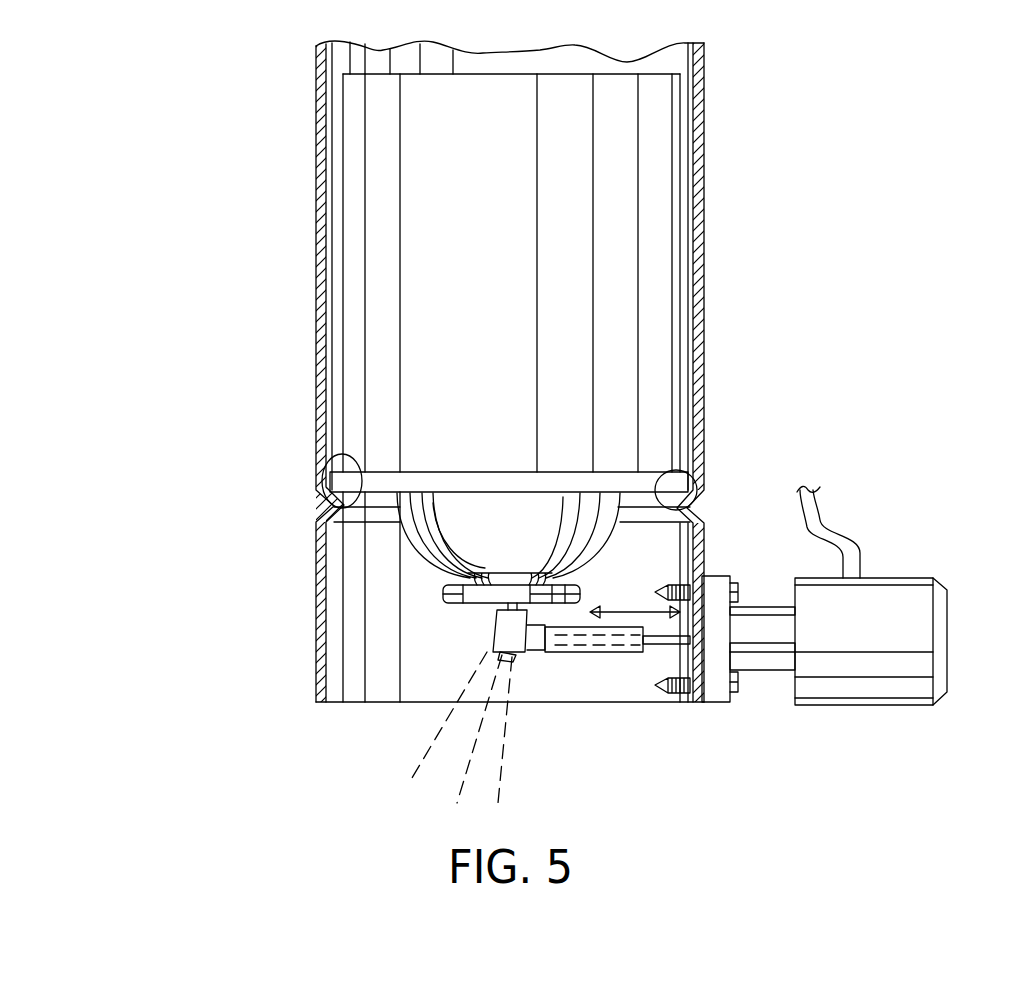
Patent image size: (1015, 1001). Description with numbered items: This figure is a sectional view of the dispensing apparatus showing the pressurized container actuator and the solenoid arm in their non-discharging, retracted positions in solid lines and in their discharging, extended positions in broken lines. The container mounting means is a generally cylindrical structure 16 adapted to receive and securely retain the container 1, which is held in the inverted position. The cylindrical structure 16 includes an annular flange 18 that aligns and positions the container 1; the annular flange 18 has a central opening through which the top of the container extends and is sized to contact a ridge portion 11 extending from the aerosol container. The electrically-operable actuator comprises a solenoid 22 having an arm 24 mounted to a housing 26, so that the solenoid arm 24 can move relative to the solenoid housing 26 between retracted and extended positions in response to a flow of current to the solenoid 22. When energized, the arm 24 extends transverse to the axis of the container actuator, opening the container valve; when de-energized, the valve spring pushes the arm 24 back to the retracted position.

The container 1 is at (440, 545).
The ridge portion 11 is at (617, 470).
The cylindrical structure 16 is at (702, 203).
The annular flange 18 is at (330, 460).
The solenoid 22 is at (757, 663).
The solenoid arm 24 is at (657, 640).
The solenoid housing 26 is at (912, 577).